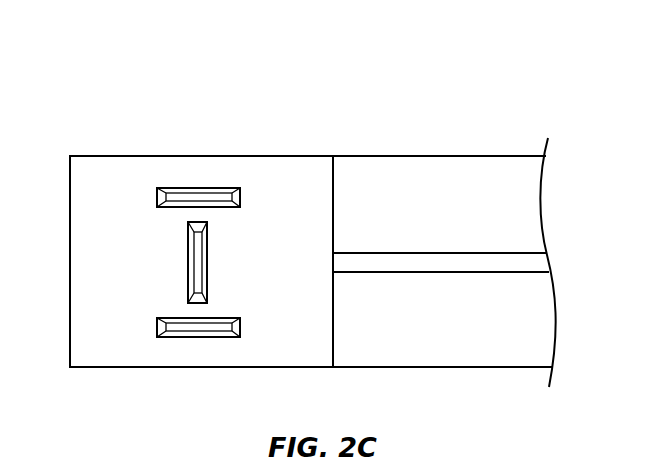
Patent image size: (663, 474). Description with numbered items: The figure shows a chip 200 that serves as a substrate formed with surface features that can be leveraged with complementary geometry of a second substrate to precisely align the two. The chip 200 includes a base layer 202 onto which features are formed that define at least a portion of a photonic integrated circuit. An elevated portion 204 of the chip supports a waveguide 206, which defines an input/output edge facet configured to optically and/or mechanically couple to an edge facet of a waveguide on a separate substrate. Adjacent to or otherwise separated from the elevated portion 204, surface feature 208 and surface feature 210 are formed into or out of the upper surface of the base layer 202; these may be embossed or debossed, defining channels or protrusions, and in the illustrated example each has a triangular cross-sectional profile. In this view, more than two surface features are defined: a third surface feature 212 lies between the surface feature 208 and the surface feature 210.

The chip 200 is at (50, 50).
The base layer 202 is at (118, 156).
The elevated portion 204 is at (433, 156).
The waveguide 206 is at (549, 258).
The surface feature 208 is at (182, 188).
The surface feature 210 is at (199, 337).
The third surface feature 212 is at (189, 262).